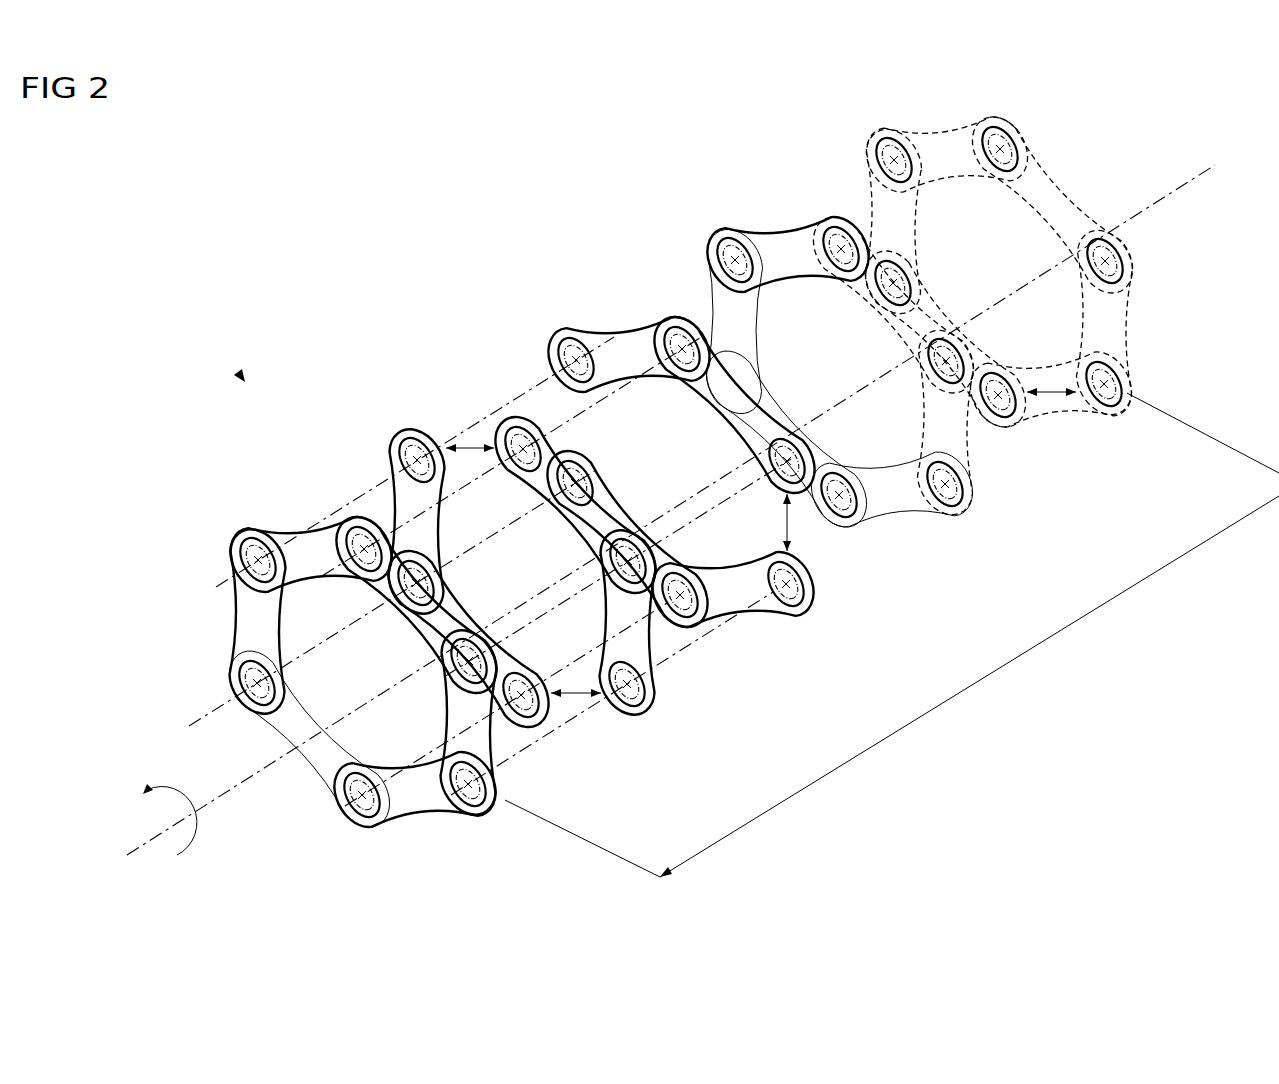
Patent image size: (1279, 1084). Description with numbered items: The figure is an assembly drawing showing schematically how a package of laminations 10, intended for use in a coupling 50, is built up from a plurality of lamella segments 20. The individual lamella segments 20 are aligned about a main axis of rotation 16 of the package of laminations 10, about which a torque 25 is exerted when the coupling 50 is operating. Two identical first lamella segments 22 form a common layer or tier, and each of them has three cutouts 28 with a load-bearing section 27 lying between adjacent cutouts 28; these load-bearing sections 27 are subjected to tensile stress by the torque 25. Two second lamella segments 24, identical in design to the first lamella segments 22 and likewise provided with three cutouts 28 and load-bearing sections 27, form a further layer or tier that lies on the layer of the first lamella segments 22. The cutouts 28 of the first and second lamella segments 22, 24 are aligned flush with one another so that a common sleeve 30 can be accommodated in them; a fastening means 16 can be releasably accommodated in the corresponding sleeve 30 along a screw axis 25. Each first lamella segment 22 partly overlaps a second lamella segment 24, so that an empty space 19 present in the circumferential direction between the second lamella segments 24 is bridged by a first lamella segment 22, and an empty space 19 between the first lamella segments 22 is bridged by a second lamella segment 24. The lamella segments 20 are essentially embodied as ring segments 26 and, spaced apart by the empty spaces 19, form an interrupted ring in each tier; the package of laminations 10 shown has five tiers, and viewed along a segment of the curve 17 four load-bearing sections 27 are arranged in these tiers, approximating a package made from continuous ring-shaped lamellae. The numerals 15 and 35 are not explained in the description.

The package of laminations 10 is at (216, 345).
The coupling 50 is at (241, 377).
The longitudinal axis 15 is at (137, 853).
The main axis of rotation 16 is at (475, 585).
The segment of the curve 17 is at (970, 698).
The empty space 19 is at (470, 446).
The lamella segment 20 is at (644, 513).
The first lamella segment 22 is at (233, 634).
The second lamella segment 24 is at (388, 510).
The torque 25 is at (206, 848).
The ring segment 26 is at (449, 684).
The load-bearing section 27 is at (719, 312).
The cutout 28 is at (681, 475).
The sleeve 30 is at (598, 330).
The bolt 35 is at (840, 427).